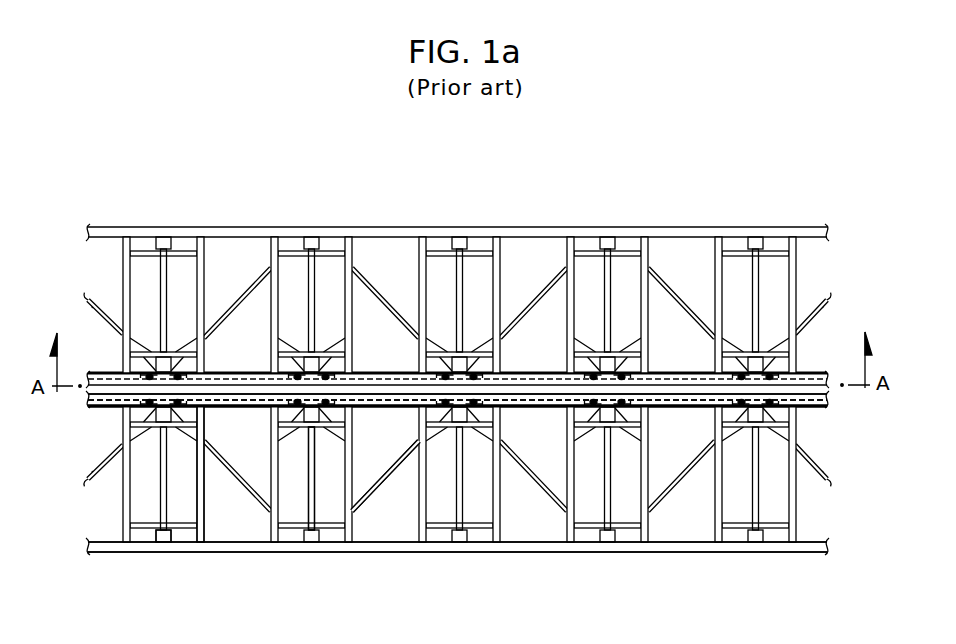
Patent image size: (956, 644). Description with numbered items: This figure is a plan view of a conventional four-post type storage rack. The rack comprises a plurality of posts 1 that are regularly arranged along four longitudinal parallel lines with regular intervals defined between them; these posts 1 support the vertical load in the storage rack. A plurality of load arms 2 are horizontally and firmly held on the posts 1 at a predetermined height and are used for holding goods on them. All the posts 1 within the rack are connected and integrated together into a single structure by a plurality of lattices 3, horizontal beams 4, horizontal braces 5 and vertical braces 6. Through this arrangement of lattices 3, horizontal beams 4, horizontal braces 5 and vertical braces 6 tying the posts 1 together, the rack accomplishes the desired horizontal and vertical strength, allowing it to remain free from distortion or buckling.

The post 1 is at (162, 543).
The load arm 2 is at (201, 517).
The lattice 3 is at (310, 483).
The horizontal beam 4 is at (283, 544).
The horizontal brace 5 is at (371, 494).
The vertical brace 6 is at (407, 401).